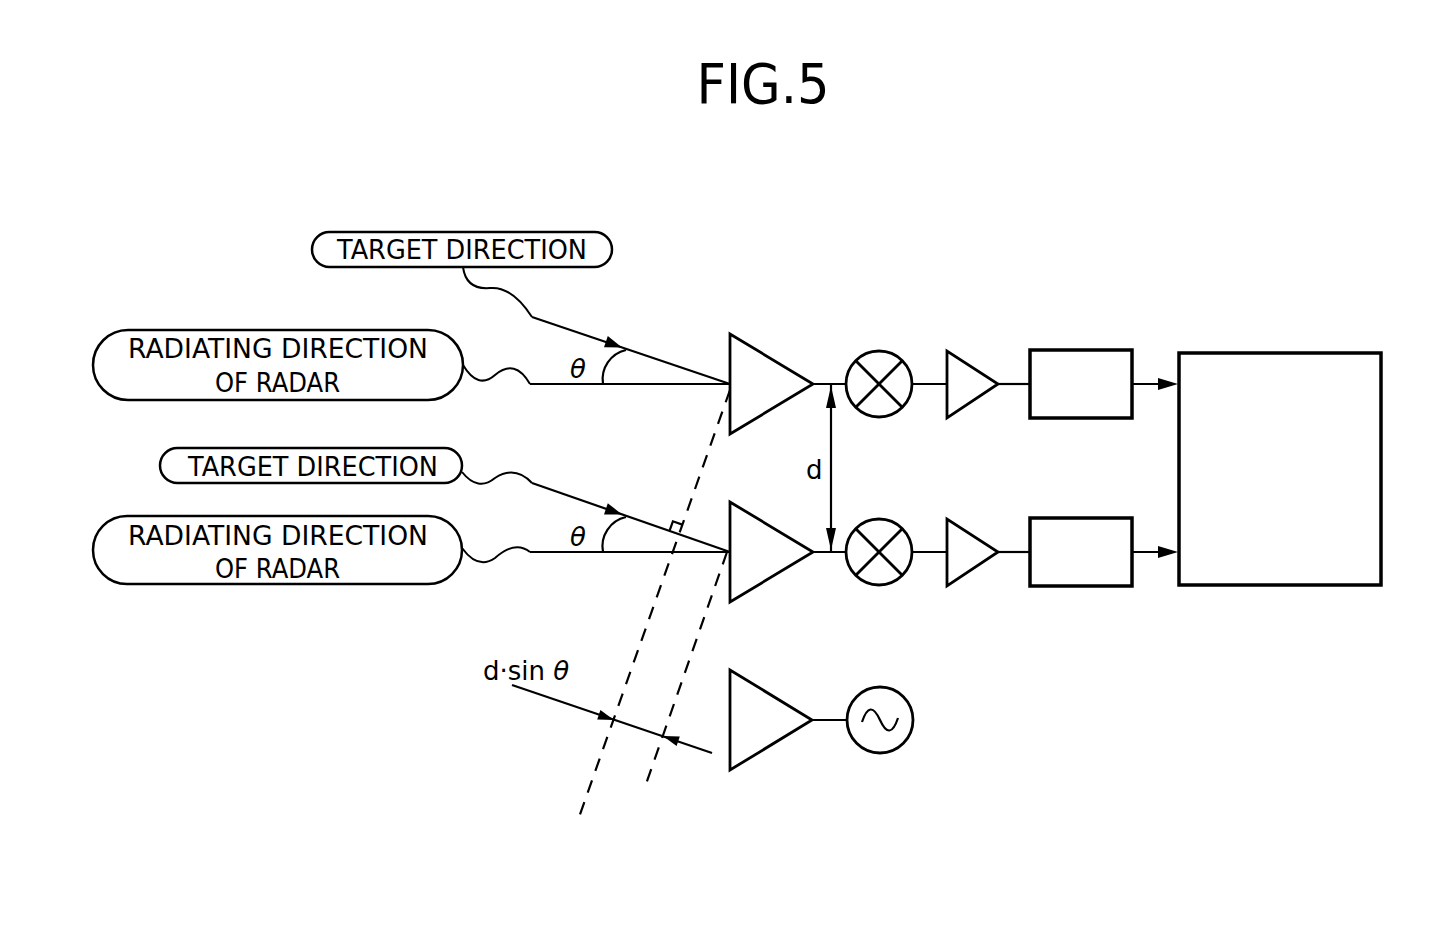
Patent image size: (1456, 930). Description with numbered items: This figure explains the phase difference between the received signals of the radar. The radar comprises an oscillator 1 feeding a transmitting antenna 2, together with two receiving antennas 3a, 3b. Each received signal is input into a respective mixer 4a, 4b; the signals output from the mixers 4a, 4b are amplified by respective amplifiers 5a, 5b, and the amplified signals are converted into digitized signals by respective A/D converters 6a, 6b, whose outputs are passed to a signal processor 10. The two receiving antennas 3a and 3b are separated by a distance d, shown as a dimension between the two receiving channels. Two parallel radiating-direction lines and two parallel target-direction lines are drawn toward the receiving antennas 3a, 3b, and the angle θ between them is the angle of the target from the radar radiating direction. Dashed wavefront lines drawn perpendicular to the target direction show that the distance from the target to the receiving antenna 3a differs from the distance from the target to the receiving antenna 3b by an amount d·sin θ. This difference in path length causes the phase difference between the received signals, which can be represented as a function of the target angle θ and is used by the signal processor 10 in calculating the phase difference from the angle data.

The oscillator 1 is at (880, 753).
The transmitting antenna 2 is at (785, 737).
The receiving antenna 3a is at (728, 347).
The receiving antenna 3b is at (785, 577).
The mixer 4a is at (879, 351).
The mixer 4b is at (879, 585).
The amplifier 5a is at (947, 366).
The amplifier 5b is at (947, 532).
The A/D converter 6a is at (1065, 350).
The A/D converter 6b is at (1065, 518).
The signal processor 10 is at (1347, 353).